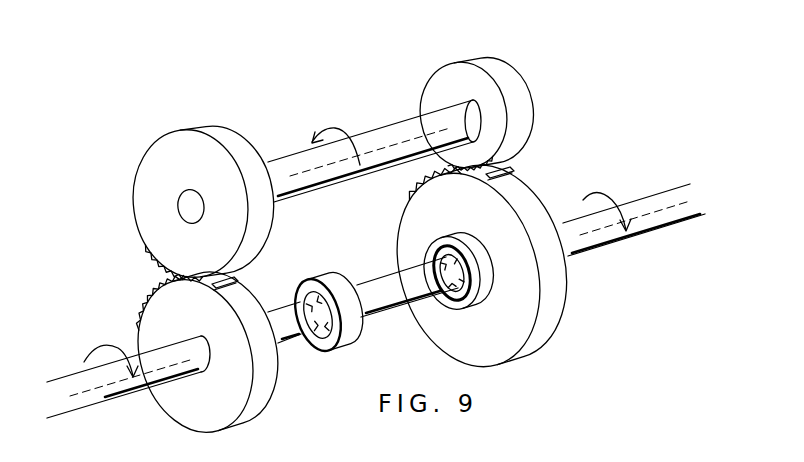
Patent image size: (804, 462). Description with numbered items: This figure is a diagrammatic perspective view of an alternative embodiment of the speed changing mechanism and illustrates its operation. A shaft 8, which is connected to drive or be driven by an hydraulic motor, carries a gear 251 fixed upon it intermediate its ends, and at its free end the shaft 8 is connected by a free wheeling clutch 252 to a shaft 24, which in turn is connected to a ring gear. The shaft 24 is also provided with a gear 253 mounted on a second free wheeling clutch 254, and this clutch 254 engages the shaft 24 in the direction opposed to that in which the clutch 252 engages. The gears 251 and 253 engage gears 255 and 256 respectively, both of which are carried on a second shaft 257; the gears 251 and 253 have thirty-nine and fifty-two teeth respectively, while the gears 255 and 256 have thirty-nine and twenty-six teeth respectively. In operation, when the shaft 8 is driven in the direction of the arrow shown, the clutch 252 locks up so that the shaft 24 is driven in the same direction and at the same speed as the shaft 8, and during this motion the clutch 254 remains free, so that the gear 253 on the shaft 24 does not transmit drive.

The shaft 8 is at (79, 381).
The shaft 24 is at (637, 208).
The gear 251 is at (264, 394).
The free wheeling clutch 252 is at (326, 279).
The gear 253 is at (540, 341).
The second free wheeling clutch 254 is at (435, 254).
The gear 255 is at (232, 141).
The gear 256 is at (509, 82).
The second shaft 257 is at (373, 134).